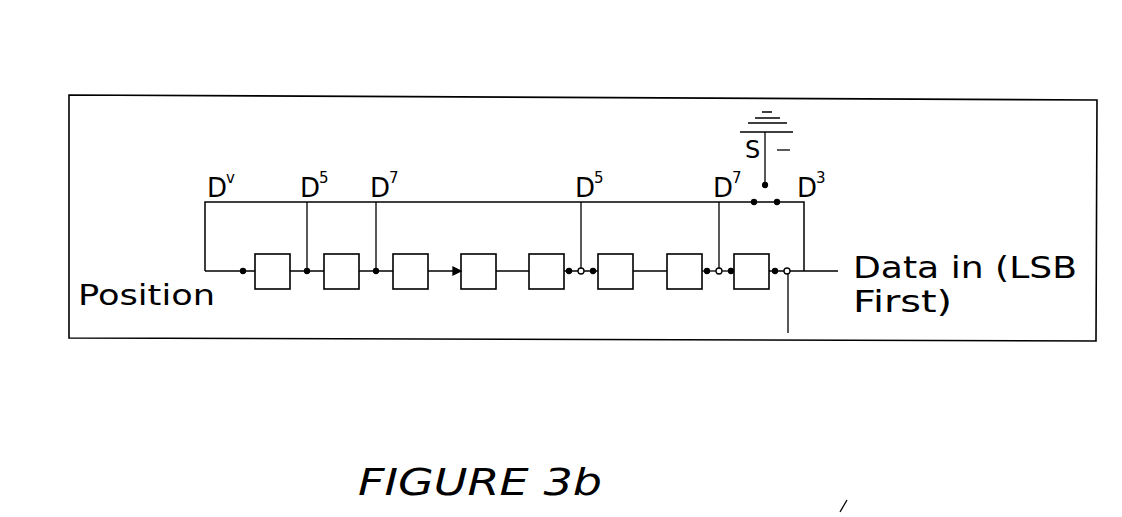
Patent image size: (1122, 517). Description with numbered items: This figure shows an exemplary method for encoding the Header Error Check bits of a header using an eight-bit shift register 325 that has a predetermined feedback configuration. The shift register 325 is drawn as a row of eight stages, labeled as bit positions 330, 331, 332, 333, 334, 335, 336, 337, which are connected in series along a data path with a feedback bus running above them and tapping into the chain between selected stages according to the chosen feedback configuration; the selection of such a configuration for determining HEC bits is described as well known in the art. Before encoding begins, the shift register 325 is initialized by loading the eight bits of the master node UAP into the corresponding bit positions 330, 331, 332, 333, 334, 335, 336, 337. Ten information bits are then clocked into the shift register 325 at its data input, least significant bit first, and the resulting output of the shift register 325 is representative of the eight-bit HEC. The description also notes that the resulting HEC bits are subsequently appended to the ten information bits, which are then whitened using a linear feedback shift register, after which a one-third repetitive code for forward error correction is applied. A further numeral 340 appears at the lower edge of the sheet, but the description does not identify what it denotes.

The shift register 325 is at (887, 96).
The bit position 330 is at (264, 290).
The bit position 331 is at (345, 290).
The bit position 332 is at (413, 290).
The bit position 333 is at (482, 290).
The bit position 334 is at (551, 290).
The bit position 335 is at (618, 290).
The bit position 336 is at (687, 290).
The bit position 337 is at (757, 290).
The element 340 is at (854, 489).